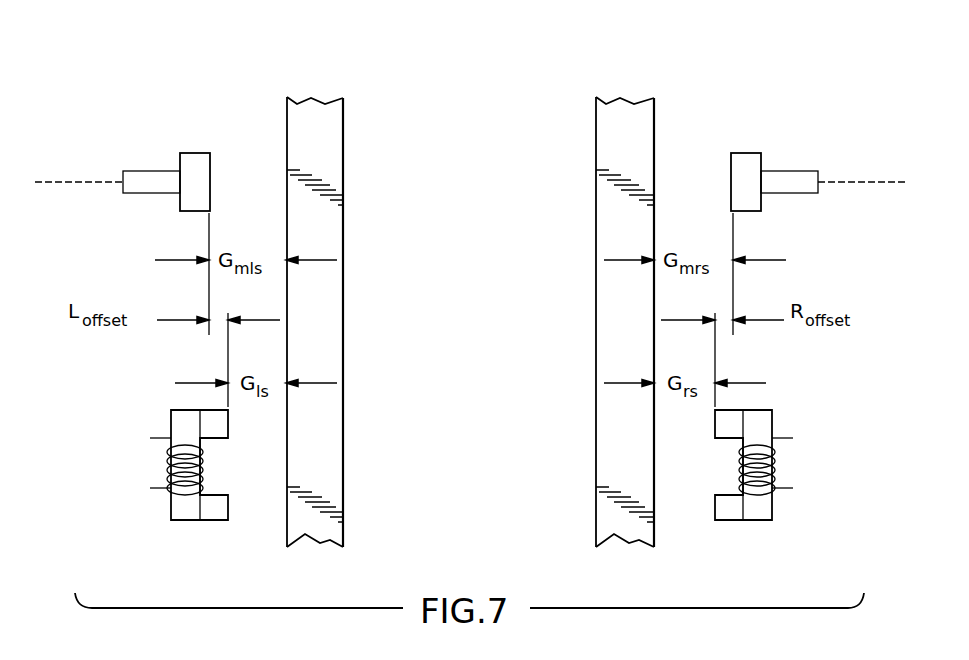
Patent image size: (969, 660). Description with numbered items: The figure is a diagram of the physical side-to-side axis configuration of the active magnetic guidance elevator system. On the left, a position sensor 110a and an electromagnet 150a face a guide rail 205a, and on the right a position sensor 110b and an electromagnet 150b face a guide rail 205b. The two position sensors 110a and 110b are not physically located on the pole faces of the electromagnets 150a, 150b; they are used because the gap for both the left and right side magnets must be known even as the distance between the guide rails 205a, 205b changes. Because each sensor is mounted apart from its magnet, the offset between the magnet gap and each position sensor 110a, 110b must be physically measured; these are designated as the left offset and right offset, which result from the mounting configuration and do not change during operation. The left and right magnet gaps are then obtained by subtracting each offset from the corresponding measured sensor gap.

The position sensor 110a is at (196, 152).
The position sensor 110b is at (744, 152).
The guide rail 205a is at (310, 97).
The guide rail 205b is at (621, 97).
The electromagnet 150a is at (211, 515).
The electromagnet 150b is at (733, 515).